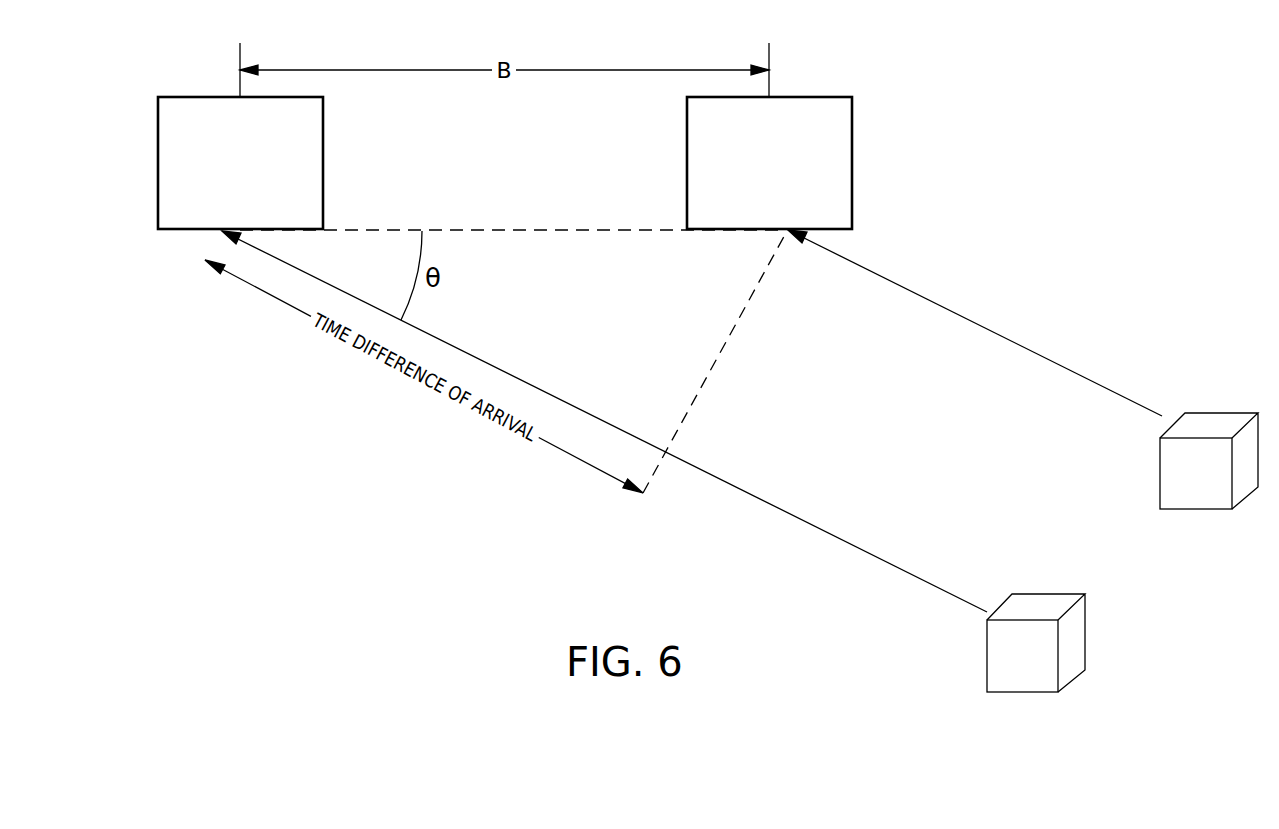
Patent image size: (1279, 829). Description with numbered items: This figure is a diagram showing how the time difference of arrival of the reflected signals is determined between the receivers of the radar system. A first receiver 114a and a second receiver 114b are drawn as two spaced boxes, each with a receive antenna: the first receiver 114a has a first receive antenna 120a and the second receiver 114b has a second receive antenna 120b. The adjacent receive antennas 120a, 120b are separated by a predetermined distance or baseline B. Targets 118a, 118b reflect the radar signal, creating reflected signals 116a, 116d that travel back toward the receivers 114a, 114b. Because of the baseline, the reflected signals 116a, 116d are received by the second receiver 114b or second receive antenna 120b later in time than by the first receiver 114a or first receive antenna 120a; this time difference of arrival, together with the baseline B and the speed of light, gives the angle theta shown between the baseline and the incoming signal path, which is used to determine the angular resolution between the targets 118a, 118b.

The first receiver 114a is at (852, 162).
The second receiver 114b is at (158, 163).
The first receive antenna 120a is at (769, 52).
The second receive antenna 120b is at (240, 53).
The reflected signal 116a is at (972, 321).
The reflected signal 116d is at (793, 513).
The target 118a is at (1222, 413).
The target 118b is at (1048, 594).